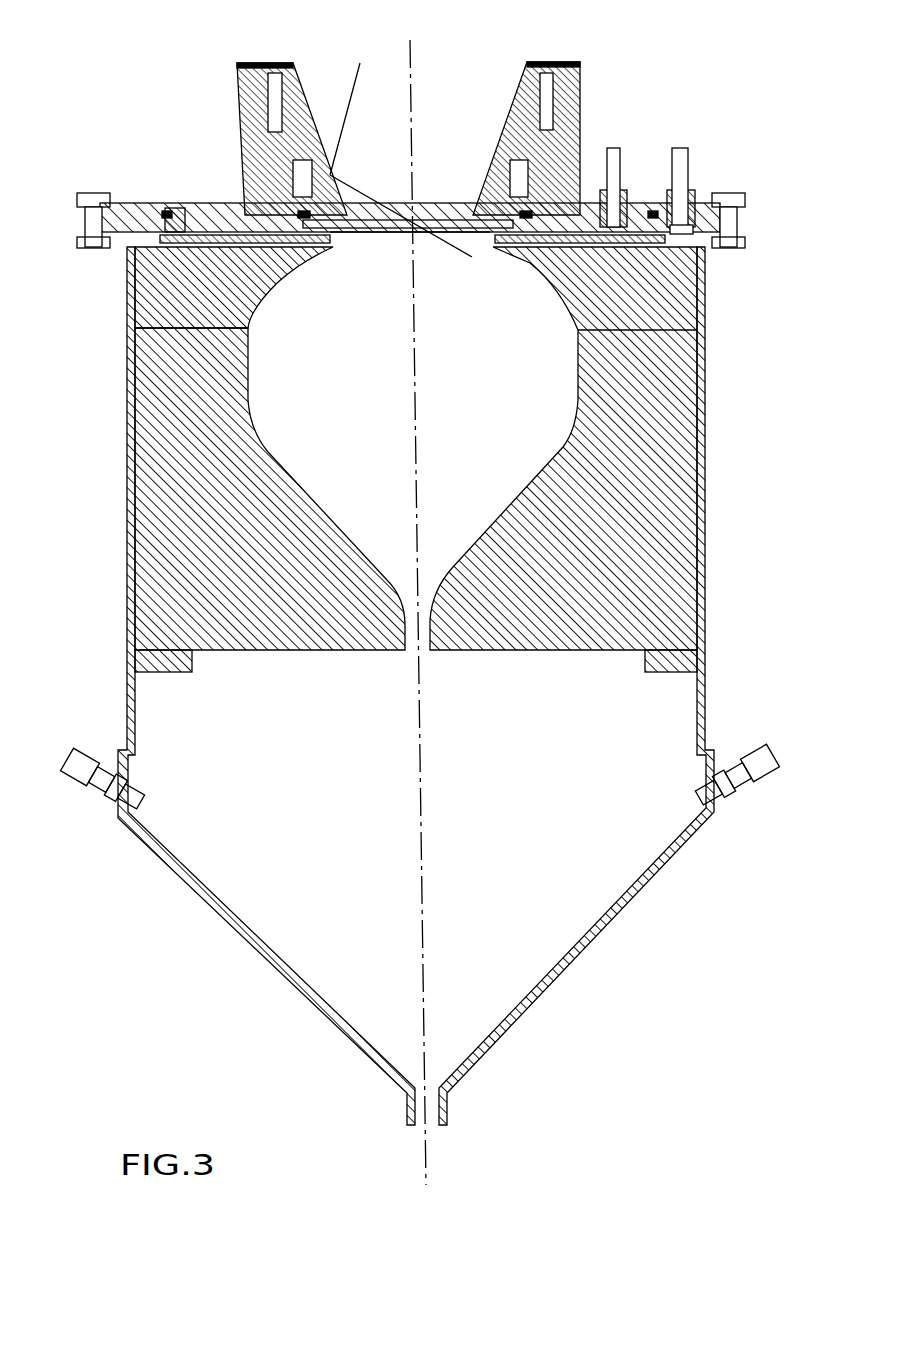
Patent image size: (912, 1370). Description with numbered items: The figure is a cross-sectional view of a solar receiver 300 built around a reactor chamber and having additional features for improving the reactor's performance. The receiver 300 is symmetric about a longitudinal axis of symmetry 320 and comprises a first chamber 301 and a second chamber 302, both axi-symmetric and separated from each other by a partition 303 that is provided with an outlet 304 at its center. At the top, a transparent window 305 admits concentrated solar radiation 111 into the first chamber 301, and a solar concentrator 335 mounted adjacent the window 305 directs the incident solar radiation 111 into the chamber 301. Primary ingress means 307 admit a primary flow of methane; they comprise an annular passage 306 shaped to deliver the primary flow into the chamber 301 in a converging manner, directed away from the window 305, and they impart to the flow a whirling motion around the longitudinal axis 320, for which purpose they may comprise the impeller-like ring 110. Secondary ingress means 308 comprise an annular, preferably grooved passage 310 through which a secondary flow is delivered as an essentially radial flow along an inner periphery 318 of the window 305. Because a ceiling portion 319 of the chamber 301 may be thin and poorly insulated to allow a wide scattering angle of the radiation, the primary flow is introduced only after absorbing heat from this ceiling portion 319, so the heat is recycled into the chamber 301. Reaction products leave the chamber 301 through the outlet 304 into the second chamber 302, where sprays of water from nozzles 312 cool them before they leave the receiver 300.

The solar receiver 300 is at (132, 103).
The first chamber 301 is at (372, 438).
The second chamber 302 is at (318, 853).
The partition 303 is at (365, 652).
The outlet 304 is at (425, 655).
The transparent window 305 is at (440, 225).
The annular passage 306 is at (310, 250).
The primary ingress means 307 is at (340, 248).
The secondary ingress means 308 is at (350, 232).
The grooved passage 310 is at (240, 207).
The nozzles 312 is at (755, 745).
The inner periphery 318 is at (388, 230).
The ceiling portion 319 is at (530, 265).
The longitudinal axis of symmetry 320 is at (412, 92).
The solar concentrator 335 is at (508, 120).
The impeller-like ring 110 is at (277, 252).
The concentrated solar radiation 111 is at (346, 110).